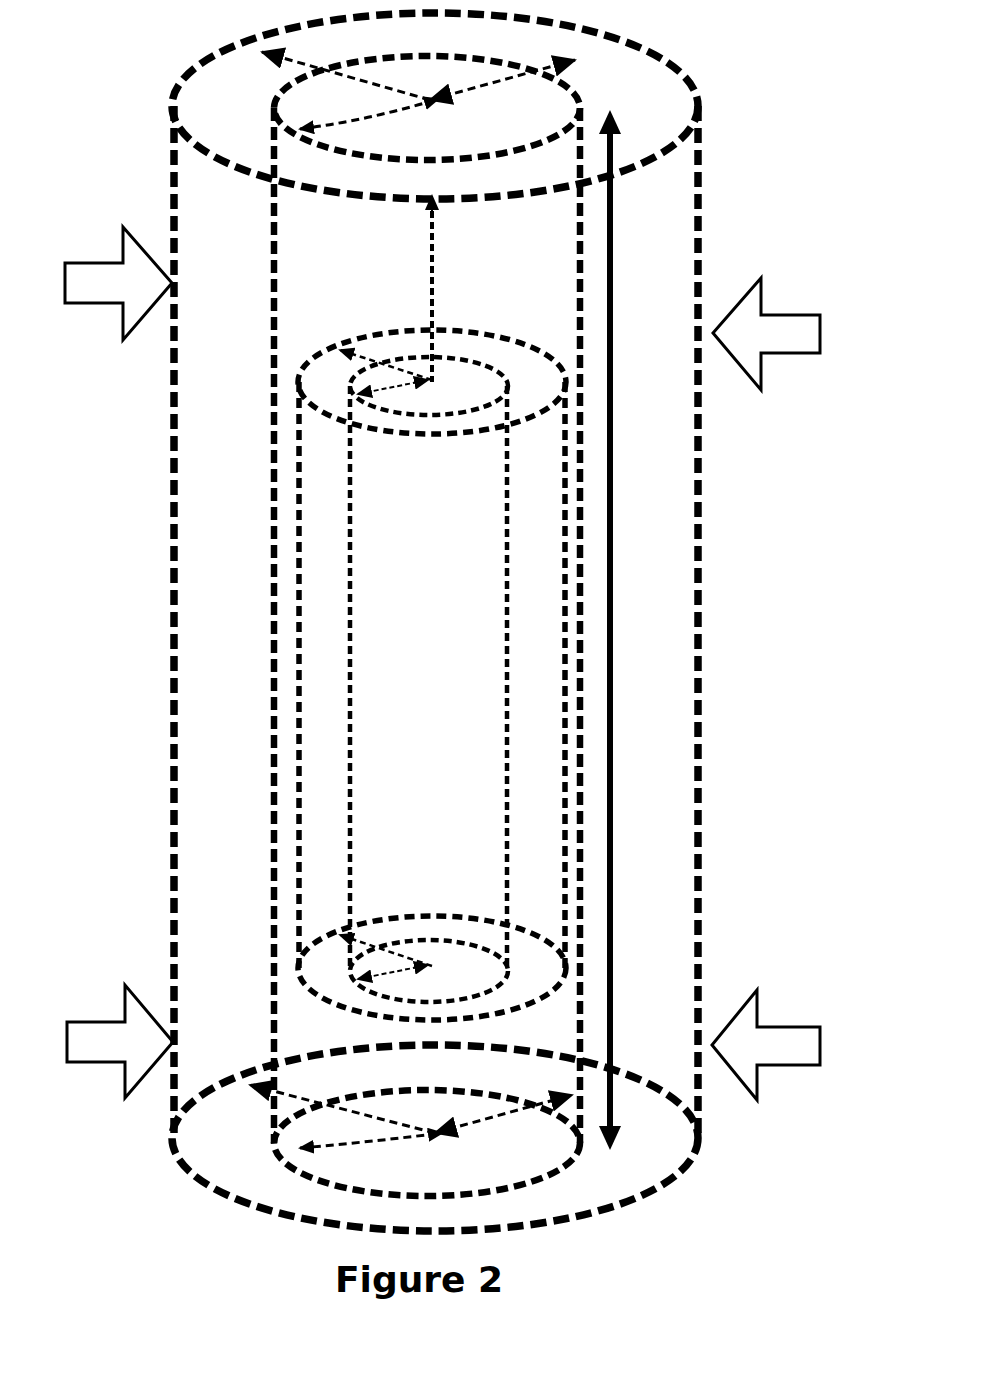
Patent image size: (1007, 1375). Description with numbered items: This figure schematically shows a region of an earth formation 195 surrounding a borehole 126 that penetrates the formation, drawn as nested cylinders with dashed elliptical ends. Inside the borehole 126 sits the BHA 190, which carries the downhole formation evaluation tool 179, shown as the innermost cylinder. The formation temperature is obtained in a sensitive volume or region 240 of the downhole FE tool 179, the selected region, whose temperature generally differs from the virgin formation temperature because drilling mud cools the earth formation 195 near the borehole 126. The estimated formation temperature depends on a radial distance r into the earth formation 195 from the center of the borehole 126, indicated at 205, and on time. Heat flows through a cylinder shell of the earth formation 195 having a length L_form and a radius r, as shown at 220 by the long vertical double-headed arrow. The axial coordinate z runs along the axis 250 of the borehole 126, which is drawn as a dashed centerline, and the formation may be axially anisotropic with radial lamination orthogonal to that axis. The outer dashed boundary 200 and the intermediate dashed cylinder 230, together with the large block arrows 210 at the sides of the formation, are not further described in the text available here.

The formation 200 is at (280, 68).
The borehole 230 is at (365, 107).
The borehole 126 is at (260, 232).
The axis 250 is at (420, 264).
The BHA 190 is at (365, 325).
The downhole formation evaluation tool 179 is at (372, 688).
The radial distance r 205 is at (511, 95).
The length L_form of cylinder shell 220 is at (624, 243).
The formation pressure Pform arrows 210 is at (117, 252).
The earth formation 195 is at (775, 498).
The sensitive volume or region 240 is at (113, 724).